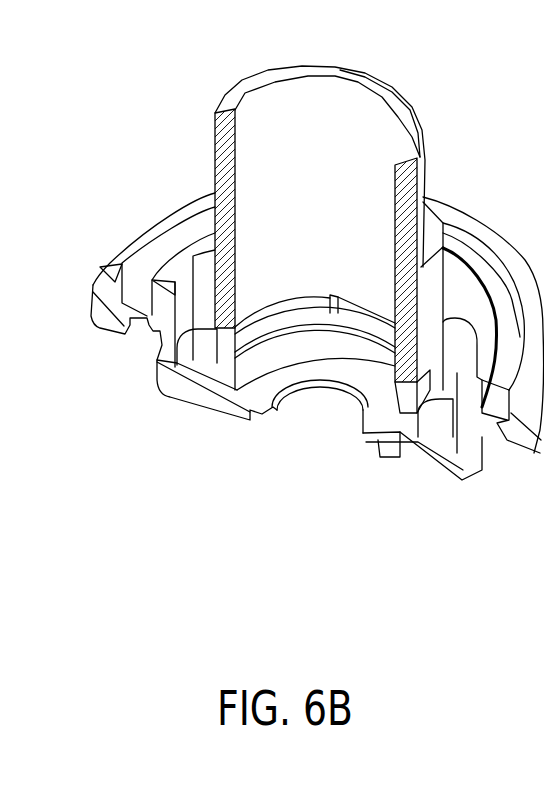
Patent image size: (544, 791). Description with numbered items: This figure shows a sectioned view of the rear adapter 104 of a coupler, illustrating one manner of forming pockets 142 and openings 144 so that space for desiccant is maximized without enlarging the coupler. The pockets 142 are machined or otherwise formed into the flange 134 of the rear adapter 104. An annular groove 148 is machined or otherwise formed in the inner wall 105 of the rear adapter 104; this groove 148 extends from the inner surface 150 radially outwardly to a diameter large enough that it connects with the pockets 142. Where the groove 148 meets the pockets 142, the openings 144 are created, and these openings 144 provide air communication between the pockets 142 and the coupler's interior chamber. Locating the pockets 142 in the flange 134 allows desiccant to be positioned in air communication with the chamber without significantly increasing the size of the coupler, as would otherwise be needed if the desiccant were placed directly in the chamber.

The rear adapter 104 is at (462, 117).
The inner wall 105 is at (215, 129).
The inner surface 150 is at (265, 107).
The flange 134 is at (152, 343).
The pockets 142 is at (197, 362).
The openings 144 is at (228, 350).
The annular groove 148 is at (317, 330).